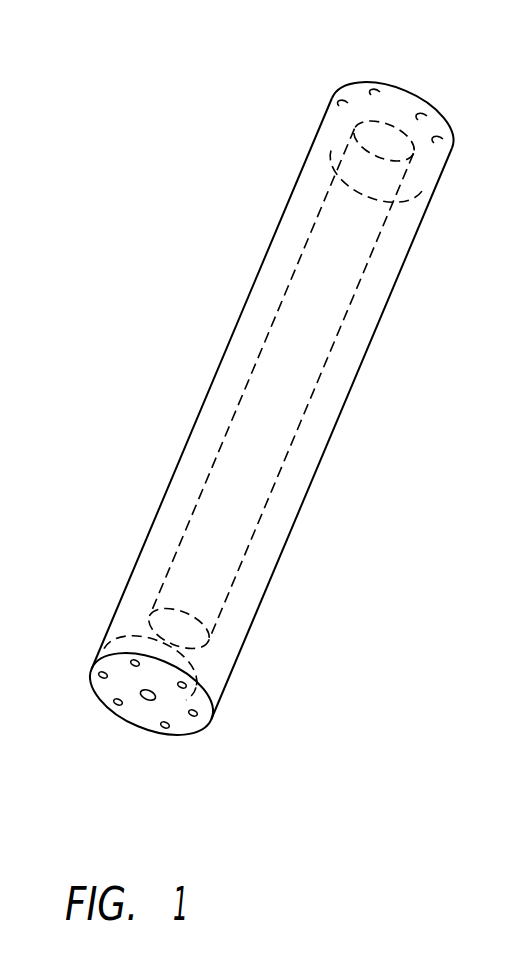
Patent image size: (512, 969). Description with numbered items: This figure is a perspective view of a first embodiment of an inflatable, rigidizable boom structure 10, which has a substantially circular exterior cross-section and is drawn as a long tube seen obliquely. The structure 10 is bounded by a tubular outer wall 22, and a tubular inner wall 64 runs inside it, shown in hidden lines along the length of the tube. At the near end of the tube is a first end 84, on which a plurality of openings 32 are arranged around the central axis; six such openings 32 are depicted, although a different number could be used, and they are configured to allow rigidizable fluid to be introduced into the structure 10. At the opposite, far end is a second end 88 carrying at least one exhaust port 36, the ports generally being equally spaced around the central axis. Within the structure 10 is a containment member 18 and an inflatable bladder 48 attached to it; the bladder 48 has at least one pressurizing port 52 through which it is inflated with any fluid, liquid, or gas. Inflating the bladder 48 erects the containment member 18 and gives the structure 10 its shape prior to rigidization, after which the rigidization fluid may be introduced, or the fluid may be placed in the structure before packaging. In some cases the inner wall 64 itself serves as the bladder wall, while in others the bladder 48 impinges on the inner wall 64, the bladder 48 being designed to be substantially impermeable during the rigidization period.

The boom structure 10 is at (210, 311).
The outer wall 22 is at (350, 383).
The exhaust port 36 is at (384, 92).
The second end 88 is at (360, 82).
The inner wall 64 is at (361, 276).
The inflatable bladder 48 is at (230, 495).
The containment member 18 is at (228, 629).
The openings 32 is at (100, 678).
The pressurizing port 52 is at (148, 703).
The first end 84 is at (152, 742).